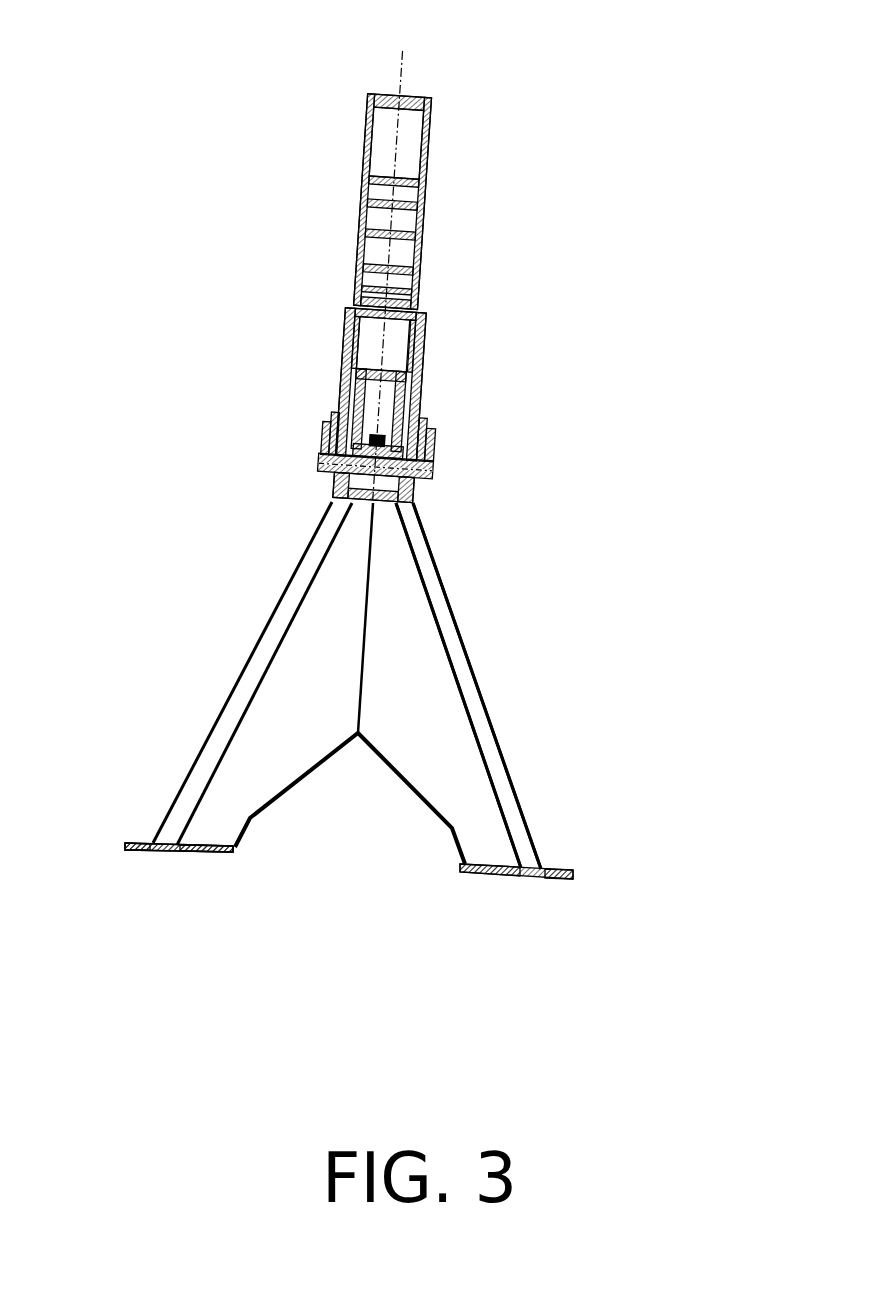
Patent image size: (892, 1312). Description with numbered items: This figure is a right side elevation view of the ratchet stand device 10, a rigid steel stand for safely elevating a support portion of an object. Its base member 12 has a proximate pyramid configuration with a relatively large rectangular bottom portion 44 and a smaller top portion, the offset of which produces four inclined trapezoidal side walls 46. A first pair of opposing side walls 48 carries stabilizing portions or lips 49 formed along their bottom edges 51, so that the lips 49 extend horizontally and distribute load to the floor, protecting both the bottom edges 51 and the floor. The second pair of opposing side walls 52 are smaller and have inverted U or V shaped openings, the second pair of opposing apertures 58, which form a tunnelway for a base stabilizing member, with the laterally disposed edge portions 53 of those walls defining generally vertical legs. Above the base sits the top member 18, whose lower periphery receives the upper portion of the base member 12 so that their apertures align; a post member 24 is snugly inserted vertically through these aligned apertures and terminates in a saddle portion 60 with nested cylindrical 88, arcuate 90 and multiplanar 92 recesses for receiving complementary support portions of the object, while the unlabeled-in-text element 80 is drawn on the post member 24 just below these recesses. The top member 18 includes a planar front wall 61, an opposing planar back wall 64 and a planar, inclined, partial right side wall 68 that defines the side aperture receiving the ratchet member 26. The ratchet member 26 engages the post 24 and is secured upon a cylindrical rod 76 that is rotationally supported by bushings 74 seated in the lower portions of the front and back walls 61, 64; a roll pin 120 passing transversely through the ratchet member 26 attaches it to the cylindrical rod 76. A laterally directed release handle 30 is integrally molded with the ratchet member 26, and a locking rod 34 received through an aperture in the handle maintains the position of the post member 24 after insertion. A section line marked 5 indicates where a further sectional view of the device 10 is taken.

The ratchet stand device 10 is at (630, 145).
The section line 5 is at (377, 76).
The base member 12 is at (450, 612).
The top member 18 is at (337, 346).
The post member 24 is at (366, 160).
The ratchet member 26 is at (402, 385).
The release handle 30 is at (358, 505).
The locking rod 34 is at (318, 470).
The bottom portion 44 is at (197, 848).
The side walls 46 is at (445, 703).
The first pair of opposing side walls 48 is at (207, 740).
The stabilizing portions 49 is at (125, 838).
The bottom edges 51 is at (150, 838).
The second pair of opposing side walls 52 is at (478, 802).
The edge portions 53 is at (208, 828).
The second pair of opposing apertures 58 is at (335, 808).
The saddle portion 60 is at (433, 96).
The planar front wall 61 is at (338, 380).
The planar back wall 64 is at (430, 336).
The partial right side wall 68 is at (400, 352).
The bushings 74 is at (332, 418).
The cylindrical rod 76 is at (322, 440).
The shaft band 80 is at (420, 298).
The cylindrical recess 88 is at (421, 201).
The arcuate recess 90 is at (412, 160).
The multiplanar recess 92 is at (420, 116).
The roll pin 120 is at (380, 440).